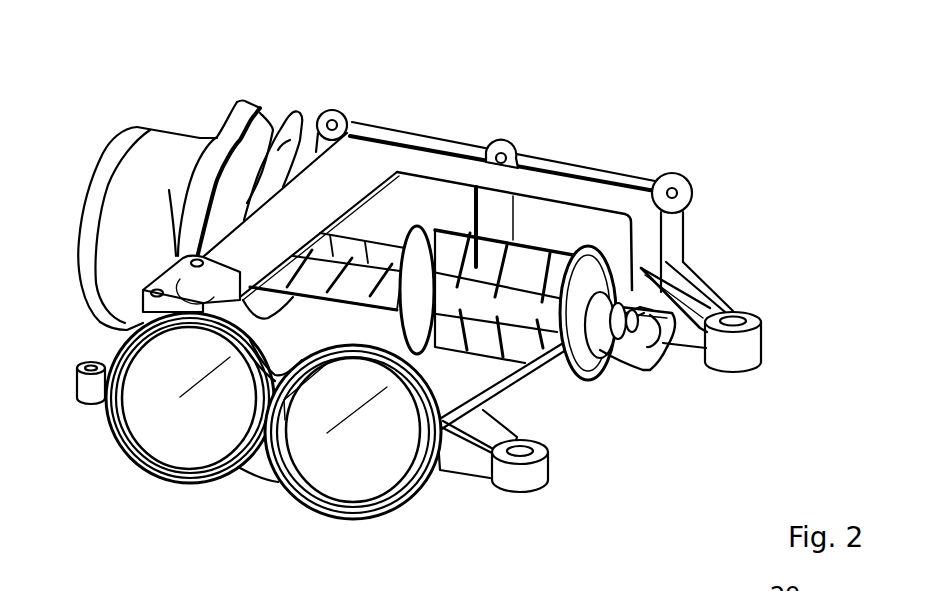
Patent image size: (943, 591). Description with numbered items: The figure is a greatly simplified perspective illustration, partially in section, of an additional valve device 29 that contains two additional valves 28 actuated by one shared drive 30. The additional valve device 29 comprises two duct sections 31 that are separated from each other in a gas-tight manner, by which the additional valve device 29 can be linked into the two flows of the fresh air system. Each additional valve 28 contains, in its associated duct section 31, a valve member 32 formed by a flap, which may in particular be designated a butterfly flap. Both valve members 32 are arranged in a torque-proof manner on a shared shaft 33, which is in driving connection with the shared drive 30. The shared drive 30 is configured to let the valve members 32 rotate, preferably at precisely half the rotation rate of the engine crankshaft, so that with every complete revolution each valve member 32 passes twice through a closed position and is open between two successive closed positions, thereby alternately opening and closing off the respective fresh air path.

The additional valve 28 is at (401, 209).
The additional valve device 29 is at (697, 131).
The shared drive 30 is at (165, 143).
The duct section 31 is at (187, 433).
The valve member 32 is at (387, 257).
The shared shaft 33 is at (613, 332).